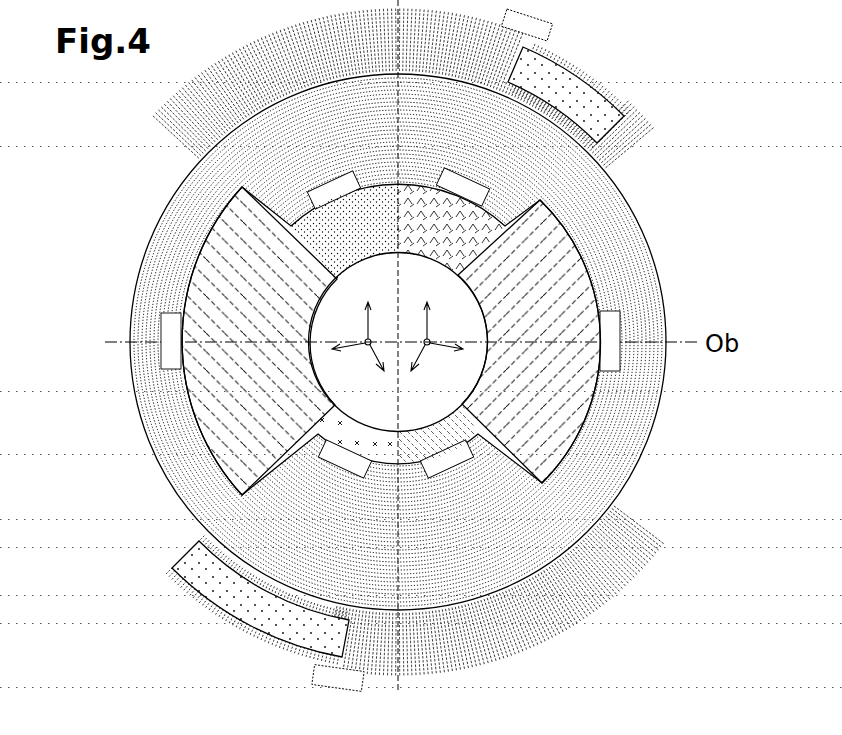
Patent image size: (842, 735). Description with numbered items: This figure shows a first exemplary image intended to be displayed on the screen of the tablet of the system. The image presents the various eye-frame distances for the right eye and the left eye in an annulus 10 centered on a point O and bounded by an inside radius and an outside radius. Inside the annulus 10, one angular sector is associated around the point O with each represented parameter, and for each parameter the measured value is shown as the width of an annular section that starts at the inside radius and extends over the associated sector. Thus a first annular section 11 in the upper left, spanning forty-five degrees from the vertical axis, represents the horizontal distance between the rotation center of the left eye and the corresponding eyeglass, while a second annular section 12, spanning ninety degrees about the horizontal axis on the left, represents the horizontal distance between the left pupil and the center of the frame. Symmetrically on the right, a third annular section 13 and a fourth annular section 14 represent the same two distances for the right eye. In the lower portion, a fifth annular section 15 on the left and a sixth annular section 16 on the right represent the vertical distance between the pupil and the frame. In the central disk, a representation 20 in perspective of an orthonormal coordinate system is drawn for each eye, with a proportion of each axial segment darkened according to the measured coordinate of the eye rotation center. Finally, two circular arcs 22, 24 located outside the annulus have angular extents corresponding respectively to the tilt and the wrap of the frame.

The annulus 10 is at (660, 268).
The first annular section 11 is at (297, 204).
The second annular section 12 is at (204, 244).
The third annular section 13 is at (508, 200).
The fourth annular section 14 is at (574, 448).
The fifth annular section 15 is at (296, 470).
The sixth annular section 16 is at (482, 489).
The representation in perspective of an orthonormal coordinate system 20 is at (344, 363).
The circular arc 22 is at (200, 578).
The circular arc 24 is at (594, 92).